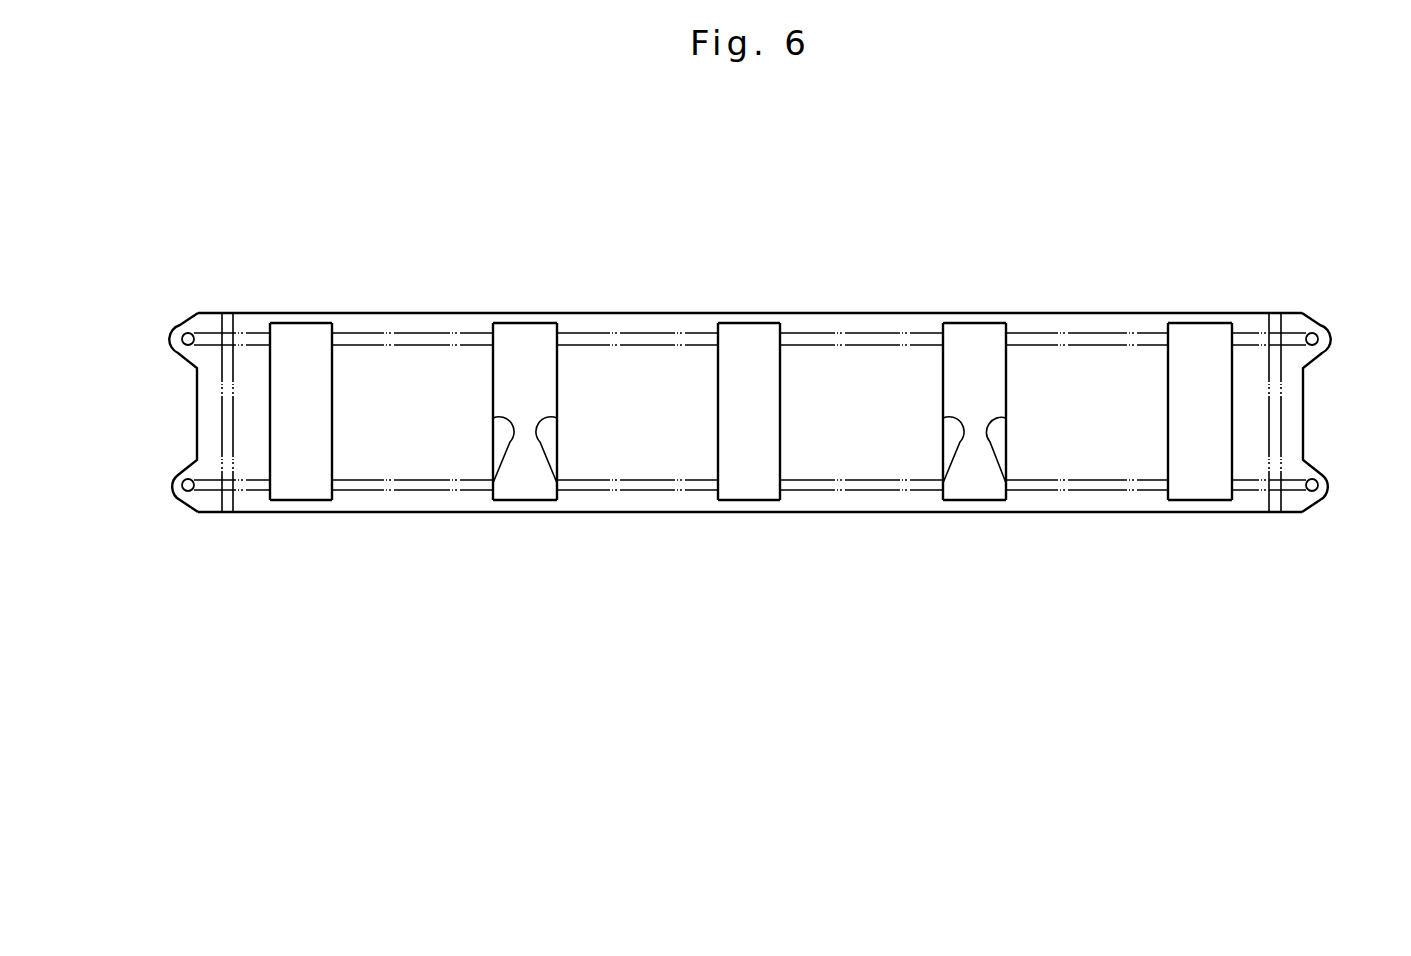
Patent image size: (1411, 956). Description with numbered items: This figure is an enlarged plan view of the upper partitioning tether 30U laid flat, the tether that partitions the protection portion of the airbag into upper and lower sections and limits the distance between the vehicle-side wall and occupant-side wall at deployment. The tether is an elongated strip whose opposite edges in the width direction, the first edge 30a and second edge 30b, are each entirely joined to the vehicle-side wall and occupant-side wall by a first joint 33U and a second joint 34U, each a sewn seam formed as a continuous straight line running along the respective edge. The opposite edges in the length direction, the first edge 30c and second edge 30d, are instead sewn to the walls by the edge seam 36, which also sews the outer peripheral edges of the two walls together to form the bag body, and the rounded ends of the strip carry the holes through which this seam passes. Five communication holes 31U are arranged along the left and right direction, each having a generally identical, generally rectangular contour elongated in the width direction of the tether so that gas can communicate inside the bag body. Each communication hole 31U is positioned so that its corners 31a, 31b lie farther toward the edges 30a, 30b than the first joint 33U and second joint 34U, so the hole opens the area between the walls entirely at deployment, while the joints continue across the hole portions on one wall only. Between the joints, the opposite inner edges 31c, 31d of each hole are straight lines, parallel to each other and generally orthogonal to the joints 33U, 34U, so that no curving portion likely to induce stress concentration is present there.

The upper partitioning tether 30U is at (1247, 262).
The first edge in the width direction 30a is at (490, 313).
The second edge in the width direction 30b is at (517, 512).
The first edge in the length direction 30c is at (198, 410).
The second edge in the length direction 30d is at (1303, 410).
The edge seam 36 is at (222, 457).
The first joint 33U is at (638, 338).
The second joint 34U is at (670, 490).
The communication hole 31U is at (488, 365).
The corner of the communication hole 31a is at (330, 323).
The corner of the communication hole 31b is at (332, 500).
The inner edge of the communication hole 31c is at (493, 483).
The inner edge of the communication hole 31d is at (557, 483).